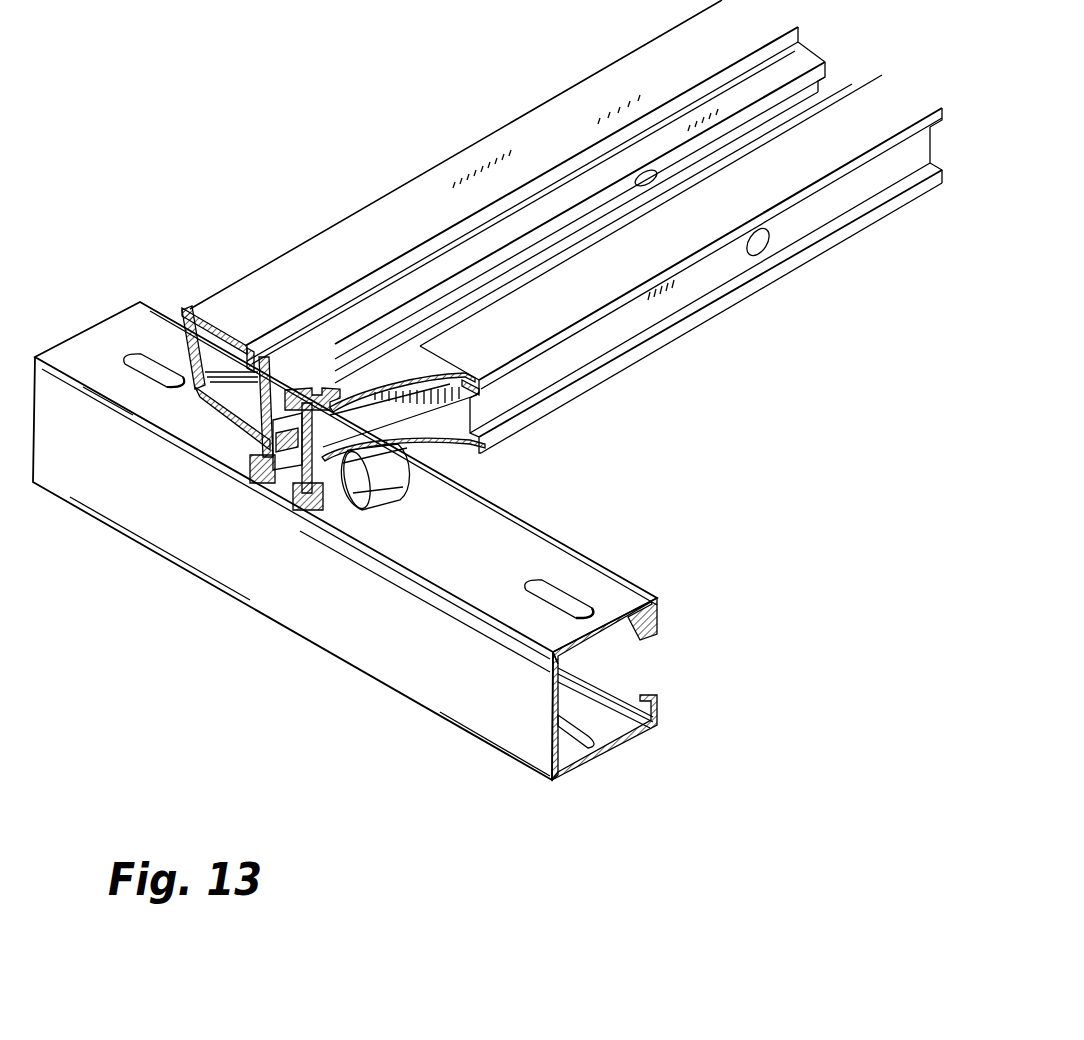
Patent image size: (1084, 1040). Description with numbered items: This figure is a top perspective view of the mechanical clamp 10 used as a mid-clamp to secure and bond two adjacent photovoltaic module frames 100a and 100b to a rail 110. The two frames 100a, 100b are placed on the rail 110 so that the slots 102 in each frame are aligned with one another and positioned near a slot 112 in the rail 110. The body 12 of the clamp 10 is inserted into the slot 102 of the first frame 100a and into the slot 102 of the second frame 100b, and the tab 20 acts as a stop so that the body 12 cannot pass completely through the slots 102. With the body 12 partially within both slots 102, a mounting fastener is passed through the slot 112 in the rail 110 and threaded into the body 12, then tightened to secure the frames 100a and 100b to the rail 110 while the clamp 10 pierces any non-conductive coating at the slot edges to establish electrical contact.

The clamp 10 is at (350, 508).
The body 12 is at (290, 425).
The tab 20 is at (410, 483).
The first frame 100a is at (731, 303).
The second frame 100b is at (523, 112).
The slot 102 is at (248, 437).
The rail 110 is at (463, 749).
The slot 112 is at (143, 360).